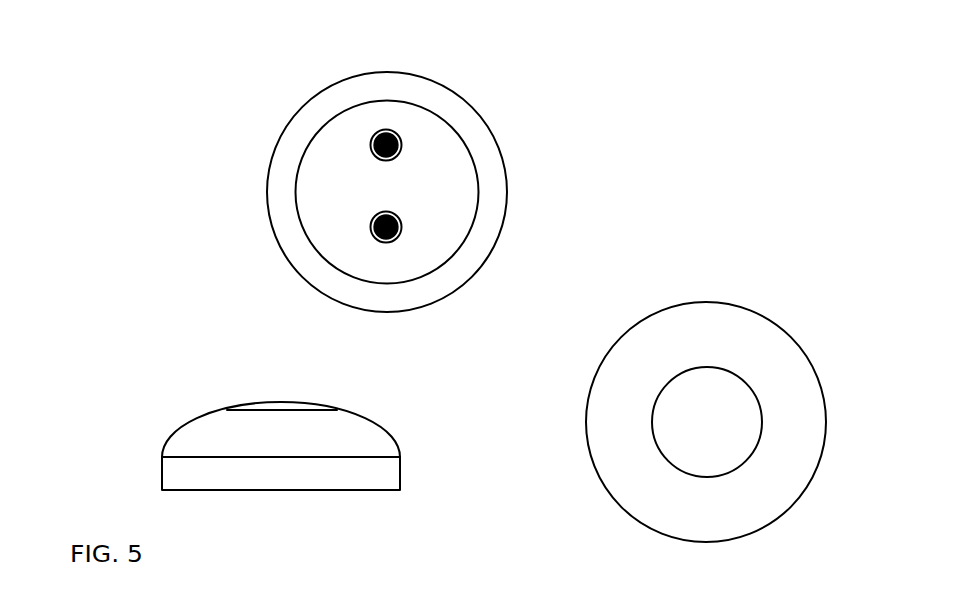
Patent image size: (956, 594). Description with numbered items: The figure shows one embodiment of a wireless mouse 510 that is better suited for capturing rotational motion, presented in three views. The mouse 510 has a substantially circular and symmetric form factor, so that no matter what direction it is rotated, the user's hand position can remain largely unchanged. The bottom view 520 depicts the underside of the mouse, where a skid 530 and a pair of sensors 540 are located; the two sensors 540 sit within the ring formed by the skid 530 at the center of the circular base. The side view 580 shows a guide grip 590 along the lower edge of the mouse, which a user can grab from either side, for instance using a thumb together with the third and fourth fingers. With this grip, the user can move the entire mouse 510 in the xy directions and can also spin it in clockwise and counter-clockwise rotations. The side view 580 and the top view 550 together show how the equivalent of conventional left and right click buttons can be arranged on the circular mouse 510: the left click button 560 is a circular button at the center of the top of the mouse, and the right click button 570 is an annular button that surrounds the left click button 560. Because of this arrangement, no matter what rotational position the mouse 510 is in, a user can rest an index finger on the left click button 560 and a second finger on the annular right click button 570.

The wireless mouse 510 is at (476, 108).
The bottom view 520 is at (287, 77).
The skid 530 is at (285, 222).
The sensors 540 is at (415, 231).
The top view 550 is at (803, 301).
The left click button 560 is at (695, 407).
The right click button 570 is at (612, 445).
The side view 580 is at (248, 370).
The guide grip 590 is at (175, 475).